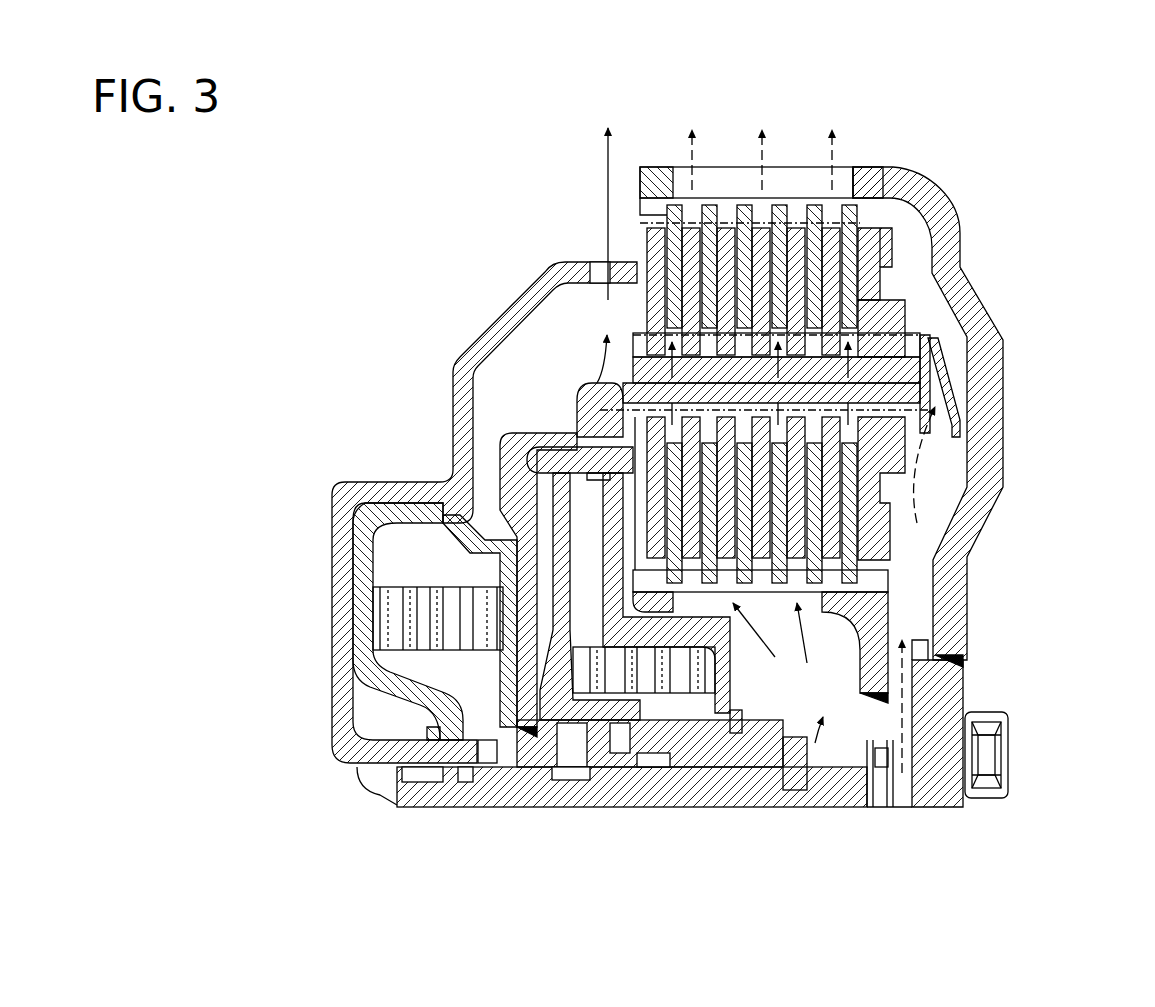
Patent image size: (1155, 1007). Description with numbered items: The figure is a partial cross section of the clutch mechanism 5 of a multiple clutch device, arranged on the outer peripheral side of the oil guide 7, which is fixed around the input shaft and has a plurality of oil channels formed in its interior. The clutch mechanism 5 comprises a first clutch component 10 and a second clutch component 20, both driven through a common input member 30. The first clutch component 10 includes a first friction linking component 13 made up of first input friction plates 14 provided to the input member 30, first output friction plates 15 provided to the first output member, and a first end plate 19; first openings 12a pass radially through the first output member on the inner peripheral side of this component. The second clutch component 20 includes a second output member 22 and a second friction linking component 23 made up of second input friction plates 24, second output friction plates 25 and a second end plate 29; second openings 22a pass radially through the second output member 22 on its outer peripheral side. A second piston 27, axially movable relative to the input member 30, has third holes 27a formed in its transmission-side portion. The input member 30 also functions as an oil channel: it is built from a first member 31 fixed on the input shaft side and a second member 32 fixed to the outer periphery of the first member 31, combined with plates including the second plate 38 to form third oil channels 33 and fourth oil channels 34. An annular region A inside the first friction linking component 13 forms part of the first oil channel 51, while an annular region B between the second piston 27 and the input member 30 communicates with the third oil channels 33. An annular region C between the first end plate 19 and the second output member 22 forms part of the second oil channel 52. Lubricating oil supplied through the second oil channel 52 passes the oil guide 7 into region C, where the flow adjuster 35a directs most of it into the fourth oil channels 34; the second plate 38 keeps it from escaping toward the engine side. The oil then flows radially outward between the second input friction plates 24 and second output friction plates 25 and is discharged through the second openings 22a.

The clutch mechanism 5 is at (990, 130).
The oil guide 7 is at (598, 815).
The first clutch component 10 is at (947, 470).
The first openings 12a is at (794, 673).
The first friction linking component 13 is at (903, 540).
The first input friction plates 14 is at (897, 562).
The first output friction plates 15 is at (893, 545).
The first end plate 19 is at (830, 547).
The second clutch component 20 is at (780, 145).
The second output member 22 is at (997, 397).
The second openings 22a is at (677, 177).
The second friction linking component 23 is at (761, 145).
The second input friction plates 24 is at (848, 242).
The second output friction plates 25 is at (880, 262).
The second piston 27 is at (545, 277).
The third holes 27a is at (597, 263).
The second end plate 29 is at (903, 262).
The input member 30 is at (577, 377).
The first member 31 is at (577, 407).
The second member 32 is at (917, 323).
The third oil channels 33 is at (617, 440).
The fourth oil channels 34 is at (933, 340).
The flow adjuster 35a is at (938, 372).
The second plate 38 is at (628, 355).
The first oil channel 51 is at (820, 605).
The second oil channel 52 is at (915, 700).
The annular region A is at (753, 712).
The annular region B is at (580, 328).
The annular region C is at (950, 500).